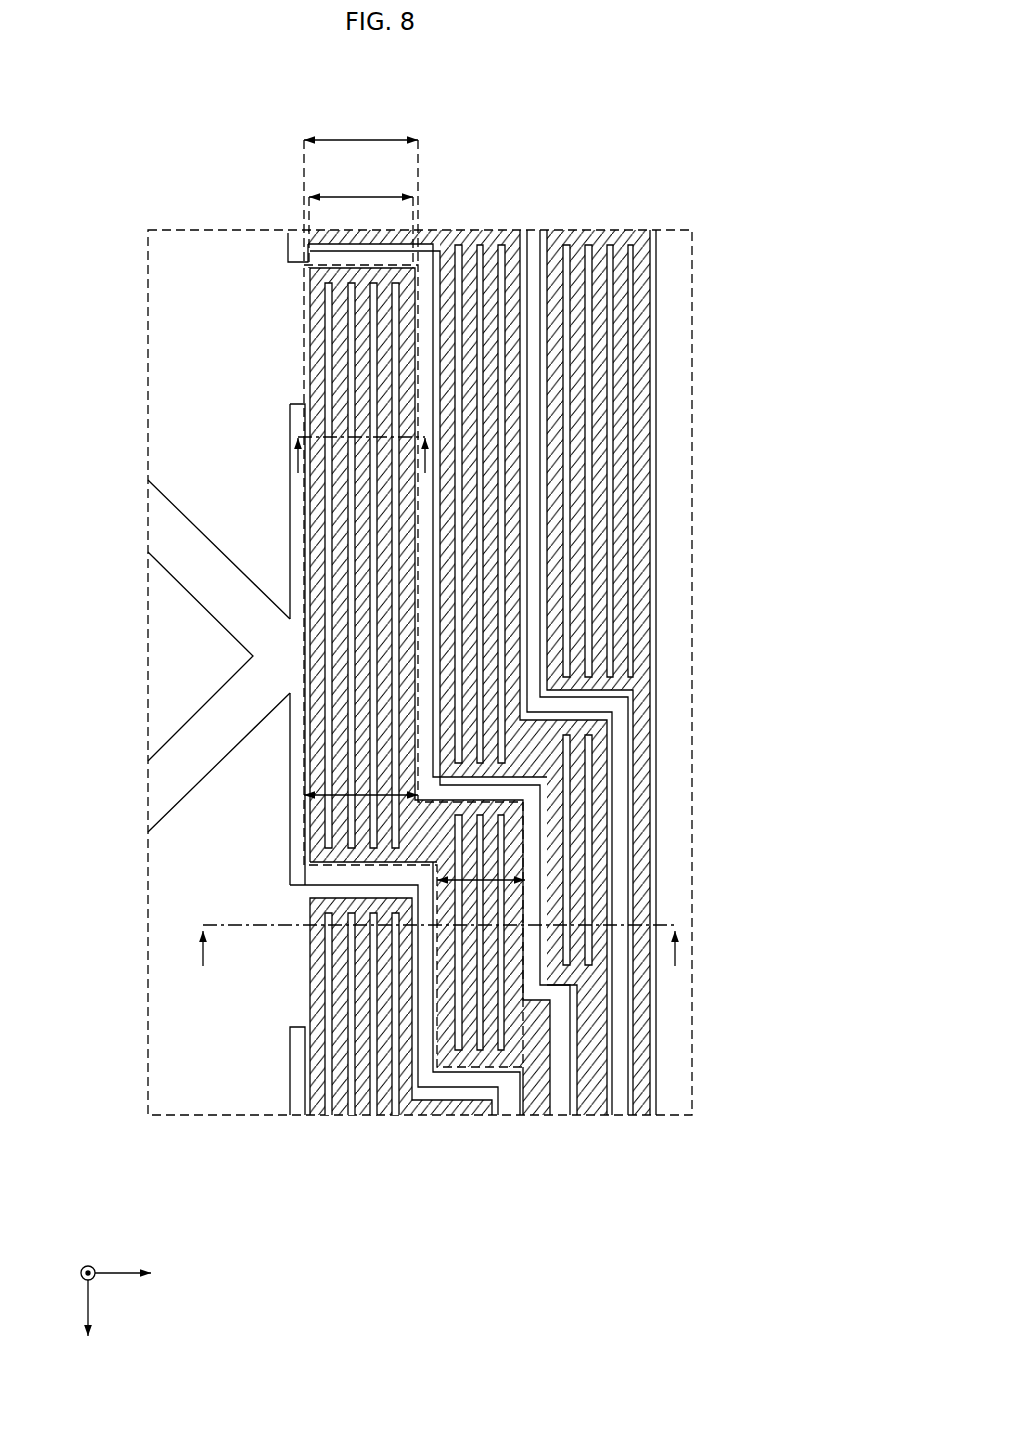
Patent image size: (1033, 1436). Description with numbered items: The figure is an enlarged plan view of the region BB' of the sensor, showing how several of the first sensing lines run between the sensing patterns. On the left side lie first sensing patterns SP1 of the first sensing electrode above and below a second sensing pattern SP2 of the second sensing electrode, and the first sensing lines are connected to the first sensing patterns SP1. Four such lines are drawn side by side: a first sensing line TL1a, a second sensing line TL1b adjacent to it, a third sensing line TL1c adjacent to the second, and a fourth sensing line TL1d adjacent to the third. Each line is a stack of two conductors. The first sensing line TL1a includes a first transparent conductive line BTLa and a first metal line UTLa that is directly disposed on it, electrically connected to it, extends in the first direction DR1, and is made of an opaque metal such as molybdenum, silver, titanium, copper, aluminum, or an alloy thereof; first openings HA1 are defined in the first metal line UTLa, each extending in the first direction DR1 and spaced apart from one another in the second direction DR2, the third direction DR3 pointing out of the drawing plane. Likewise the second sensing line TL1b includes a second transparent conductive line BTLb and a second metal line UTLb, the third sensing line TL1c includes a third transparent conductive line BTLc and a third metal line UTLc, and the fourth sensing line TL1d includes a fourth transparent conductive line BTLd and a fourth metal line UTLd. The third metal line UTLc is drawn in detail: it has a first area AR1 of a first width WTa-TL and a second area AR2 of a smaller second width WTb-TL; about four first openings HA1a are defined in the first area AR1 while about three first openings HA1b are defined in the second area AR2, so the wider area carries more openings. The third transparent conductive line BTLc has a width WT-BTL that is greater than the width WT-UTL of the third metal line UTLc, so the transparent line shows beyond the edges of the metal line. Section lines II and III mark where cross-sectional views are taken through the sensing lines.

The region BB' is at (420, 629).
The fourth metal line UTLd is at (338, 1115).
The third metal line UTLc is at (528, 1115).
The second metal line UTLb is at (597, 1013).
The first metal line UTLa is at (640, 1070).
The fourth transparent conductive line BTLd is at (305, 1115).
The third transparent conductive line BTLc is at (549, 1115).
The second transparent conductive line BTLb is at (610, 1040).
The first transparent conductive line BTLa is at (655, 1100).
The fourth sensing line TL1d is at (389, 1180).
The third sensing line TL1c is at (602, 1180).
The second sensing line TL1b is at (777, 1000).
The first sensing line TL1a is at (777, 1058).
The first area AR1 is at (324, 391).
The second area AR2 is at (436, 1000).
The first openings HA1 is at (634, 412).
The first openings HA1a is at (300, 411).
The first openings HA1b is at (456, 1030).
The first sensing patterns SP1 is at (158, 300).
The second sensing patterns SP2 is at (158, 651).
The width of the third transparent conductive line WT-BTL is at (361, 191).
The width of the third metal line WT-UTL is at (361, 221).
The first width WTa-TL is at (352, 798).
The second width WTb-TL is at (480, 878).
The section line II-II' II is at (442, 959).
The section line III-III' III is at (366, 470).
The first direction DR1 is at (89, 1324).
The second direction DR2 is at (147, 1274).
The third direction DR3 is at (89, 1258).